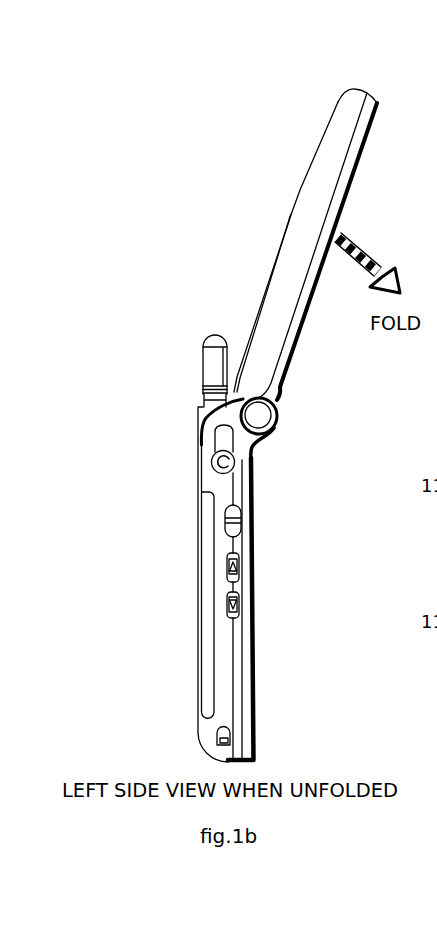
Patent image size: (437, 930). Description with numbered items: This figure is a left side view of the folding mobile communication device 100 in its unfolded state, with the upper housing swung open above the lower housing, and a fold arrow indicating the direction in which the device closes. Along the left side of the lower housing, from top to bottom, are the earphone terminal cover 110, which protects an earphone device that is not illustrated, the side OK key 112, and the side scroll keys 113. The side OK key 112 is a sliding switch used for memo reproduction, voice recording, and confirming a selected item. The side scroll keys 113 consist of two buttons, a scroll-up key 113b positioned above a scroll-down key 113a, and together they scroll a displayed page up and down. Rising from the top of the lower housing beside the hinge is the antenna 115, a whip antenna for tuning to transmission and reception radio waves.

The communication device 100 is at (369, 95).
The earphone terminal cover 110 is at (247, 457).
The side OK key 112 is at (250, 520).
The side scroll keys 113 is at (303, 583).
The scroll-down key 113a is at (247, 610).
The scroll-up key 113b is at (247, 562).
The antenna 115 is at (203, 375).